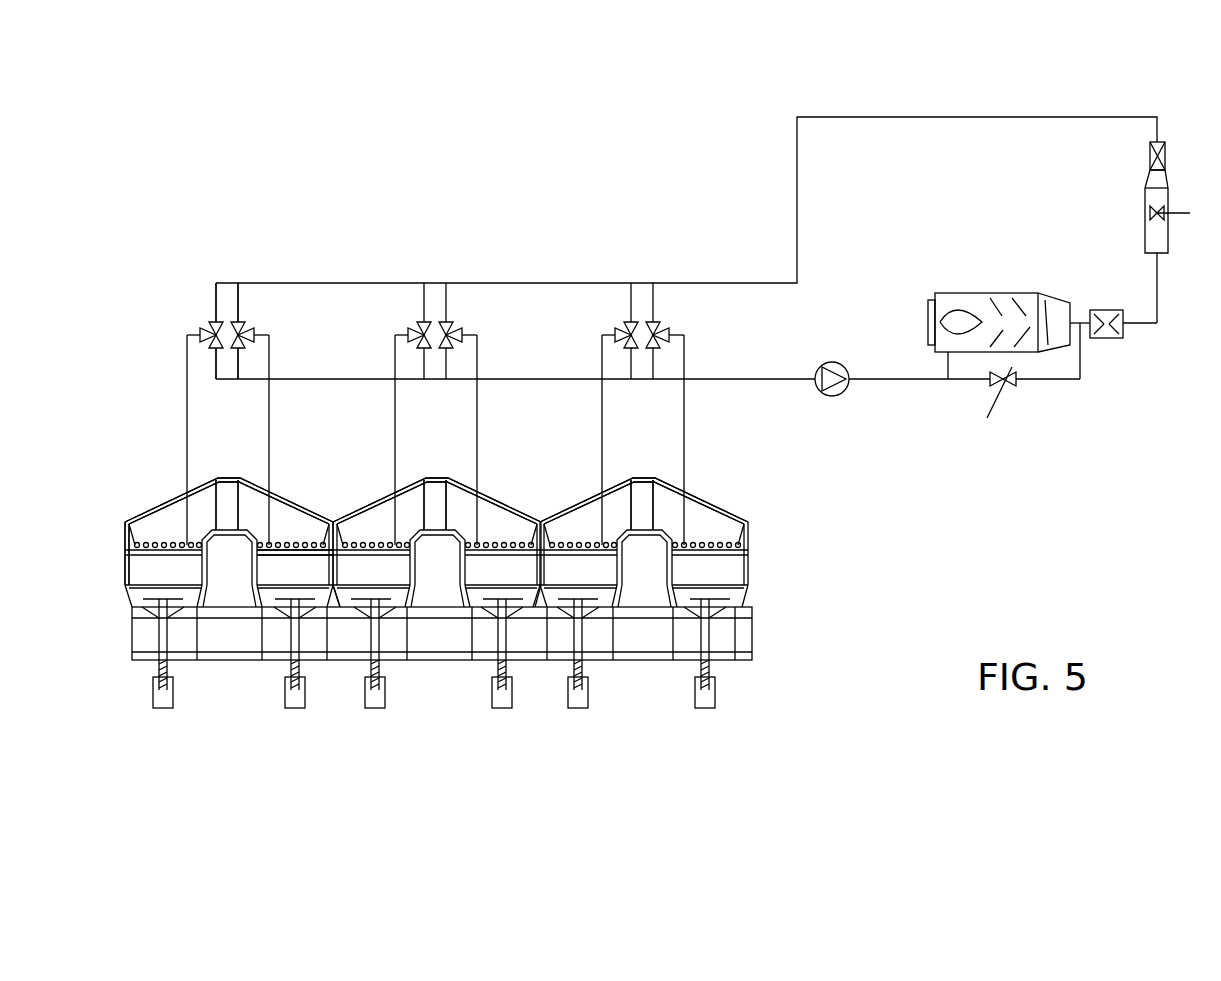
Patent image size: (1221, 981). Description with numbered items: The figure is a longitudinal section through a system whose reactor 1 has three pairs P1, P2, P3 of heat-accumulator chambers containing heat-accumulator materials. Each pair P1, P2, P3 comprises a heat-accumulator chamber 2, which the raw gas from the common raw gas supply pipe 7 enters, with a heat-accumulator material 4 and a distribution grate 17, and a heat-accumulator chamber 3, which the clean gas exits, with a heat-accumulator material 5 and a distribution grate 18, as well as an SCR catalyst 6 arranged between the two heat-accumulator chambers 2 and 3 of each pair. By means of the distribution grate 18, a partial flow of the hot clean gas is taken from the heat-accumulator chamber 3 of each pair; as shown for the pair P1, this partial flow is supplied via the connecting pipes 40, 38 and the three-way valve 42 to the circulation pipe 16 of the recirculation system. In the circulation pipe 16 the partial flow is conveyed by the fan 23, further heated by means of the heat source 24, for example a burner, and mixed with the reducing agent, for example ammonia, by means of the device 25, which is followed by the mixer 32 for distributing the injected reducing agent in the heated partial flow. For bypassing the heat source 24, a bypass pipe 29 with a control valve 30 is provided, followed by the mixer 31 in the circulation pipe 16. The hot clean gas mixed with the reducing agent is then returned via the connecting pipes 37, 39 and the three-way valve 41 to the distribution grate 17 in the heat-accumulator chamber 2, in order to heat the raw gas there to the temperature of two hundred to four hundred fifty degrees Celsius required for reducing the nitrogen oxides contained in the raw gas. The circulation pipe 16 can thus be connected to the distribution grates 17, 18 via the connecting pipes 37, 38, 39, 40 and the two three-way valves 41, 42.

The reactor 1 is at (830, 514).
The heat-accumulator chamber 2 is at (166, 539).
The heat-accumulator chamber 3 is at (296, 539).
The heat-accumulator material 4 is at (166, 581).
The heat-accumulator material 5 is at (301, 581).
The SCR catalyst 6 is at (233, 478).
The raw gas supply pipe 7 is at (752, 631).
The circulation pipe 16 is at (1088, 117).
The distribution grate 17 is at (125, 522).
The distribution grate 18 is at (310, 548).
The fan 23 is at (845, 394).
The heat source 24 is at (1003, 293).
The device 25 is at (1172, 210).
The bypass pipe 29 is at (1050, 395).
The control valve 30 is at (932, 410).
The mixer 31 is at (1120, 345).
The mixer 32 is at (1150, 156).
The connecting pipe 37 is at (215, 300).
The connecting pipe 38 is at (242, 300).
The connecting pipe 39 is at (187, 385).
The connecting pipe 40 is at (269, 401).
The three-way valve 41 is at (210, 327).
The three-way valve 42 is at (252, 328).
The pair P1 is at (168, 457).
The pair P2 is at (373, 484).
The pair P3 is at (575, 485).